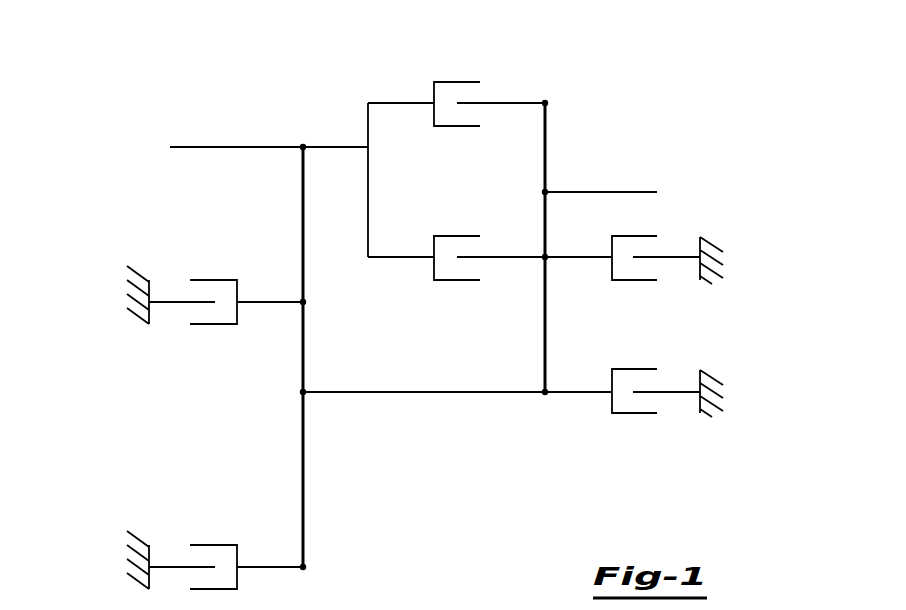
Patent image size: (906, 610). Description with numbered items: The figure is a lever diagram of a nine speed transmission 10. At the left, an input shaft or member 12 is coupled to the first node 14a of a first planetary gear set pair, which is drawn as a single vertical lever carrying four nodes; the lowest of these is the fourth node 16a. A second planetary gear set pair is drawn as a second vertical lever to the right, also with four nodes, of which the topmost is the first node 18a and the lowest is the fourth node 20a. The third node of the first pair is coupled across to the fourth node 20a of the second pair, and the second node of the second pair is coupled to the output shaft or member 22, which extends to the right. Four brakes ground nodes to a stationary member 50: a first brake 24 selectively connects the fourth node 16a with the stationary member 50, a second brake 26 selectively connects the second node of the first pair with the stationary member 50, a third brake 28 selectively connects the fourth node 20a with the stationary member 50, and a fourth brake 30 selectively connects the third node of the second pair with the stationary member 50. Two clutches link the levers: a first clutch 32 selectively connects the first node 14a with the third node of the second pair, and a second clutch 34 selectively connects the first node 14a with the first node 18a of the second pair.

The transmission 10 is at (685, 72).
The input shaft or member 12 is at (183, 147).
The first node 14a is at (303, 147).
The fourth node 16a is at (305, 567).
The first node 18a is at (547, 103).
The fourth node 20a is at (545, 396).
The output shaft or member 22 is at (628, 191).
The first brake 24 is at (213, 545).
The second brake 26 is at (213, 280).
The third brake 28 is at (633, 414).
The fourth brake 30 is at (633, 281).
The first clutch 32 is at (444, 236).
The second clutch 34 is at (468, 82).
The stationary member 50 is at (705, 241).